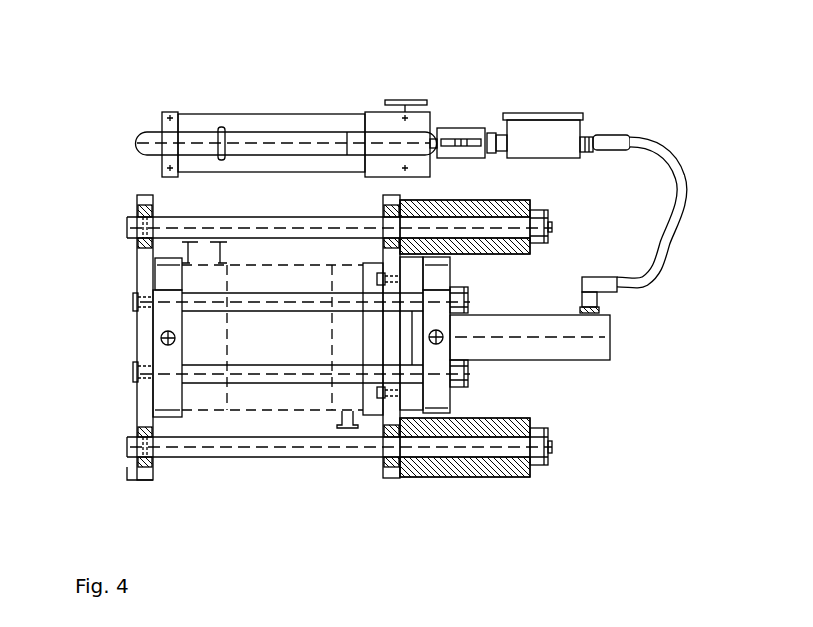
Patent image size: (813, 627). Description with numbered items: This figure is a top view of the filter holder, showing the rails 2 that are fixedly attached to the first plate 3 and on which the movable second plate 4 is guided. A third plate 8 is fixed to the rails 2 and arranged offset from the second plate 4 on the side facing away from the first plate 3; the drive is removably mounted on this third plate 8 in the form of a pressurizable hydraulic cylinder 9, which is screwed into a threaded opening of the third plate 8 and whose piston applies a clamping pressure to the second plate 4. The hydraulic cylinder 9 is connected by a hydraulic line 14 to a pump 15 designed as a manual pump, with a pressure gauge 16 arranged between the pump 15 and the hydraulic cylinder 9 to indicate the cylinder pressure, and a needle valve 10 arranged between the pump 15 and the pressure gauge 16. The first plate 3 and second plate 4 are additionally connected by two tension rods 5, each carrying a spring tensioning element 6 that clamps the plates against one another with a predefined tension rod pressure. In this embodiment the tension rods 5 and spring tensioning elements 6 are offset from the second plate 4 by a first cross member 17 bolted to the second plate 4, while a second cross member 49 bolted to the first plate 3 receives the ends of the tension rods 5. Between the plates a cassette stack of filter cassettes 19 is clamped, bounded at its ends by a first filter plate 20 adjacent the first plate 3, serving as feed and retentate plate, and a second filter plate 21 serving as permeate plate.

The rails 2 is at (238, 378).
The first plate 3 is at (167, 280).
The second plate 4 is at (372, 275).
The tension rods 5 is at (167, 228).
The spring tensioning elements 6 is at (512, 207).
The third plate 8 is at (440, 275).
The hydraulic cylinder 9 is at (580, 343).
The needle valve 10 is at (453, 133).
The hydraulic line 14 is at (675, 210).
The pump 15 is at (200, 125).
The pressure gauge 16 is at (558, 127).
The first cross member 17 is at (393, 477).
The filter cassettes 19 is at (268, 393).
The first filter plate 20 is at (198, 395).
The second filter plate 21 is at (345, 398).
The second cross member 49 is at (147, 345).